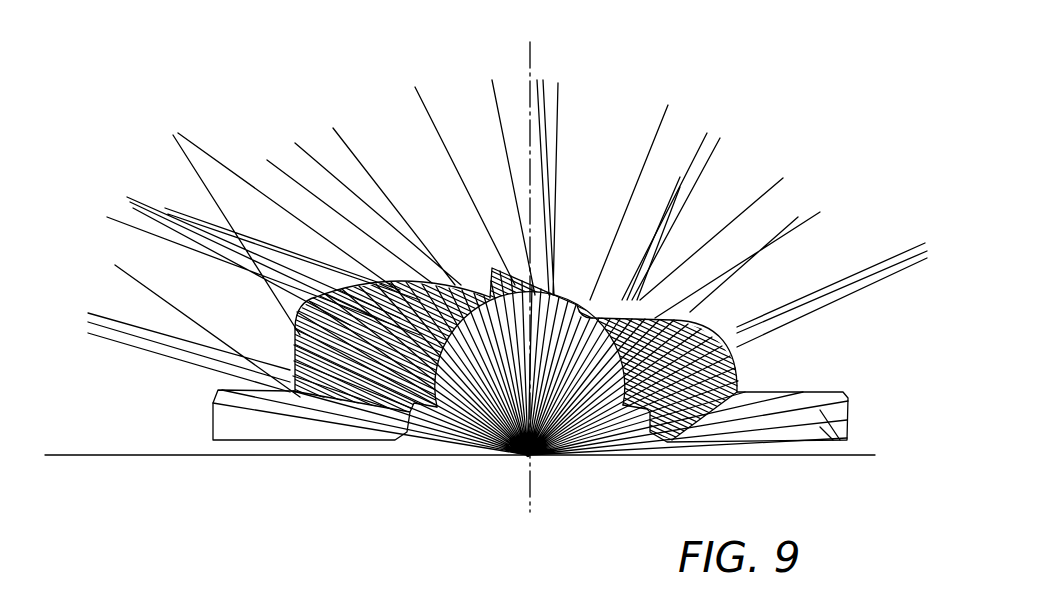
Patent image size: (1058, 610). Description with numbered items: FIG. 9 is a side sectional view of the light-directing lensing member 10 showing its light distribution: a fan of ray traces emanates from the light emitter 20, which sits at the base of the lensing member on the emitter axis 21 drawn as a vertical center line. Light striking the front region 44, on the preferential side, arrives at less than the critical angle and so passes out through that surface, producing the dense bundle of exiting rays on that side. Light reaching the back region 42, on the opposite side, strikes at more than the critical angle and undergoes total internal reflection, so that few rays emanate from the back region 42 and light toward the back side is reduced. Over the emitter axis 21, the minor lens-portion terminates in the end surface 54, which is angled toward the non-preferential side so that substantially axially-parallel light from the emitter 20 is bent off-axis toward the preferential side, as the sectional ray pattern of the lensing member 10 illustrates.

The light-directing lensing member 10 is at (763, 132).
The light emitter 20 is at (525, 456).
The emitter axis 21 is at (530, 63).
The back region 42 is at (727, 312).
The front region 44 is at (318, 298).
The end surface 54 is at (578, 300).